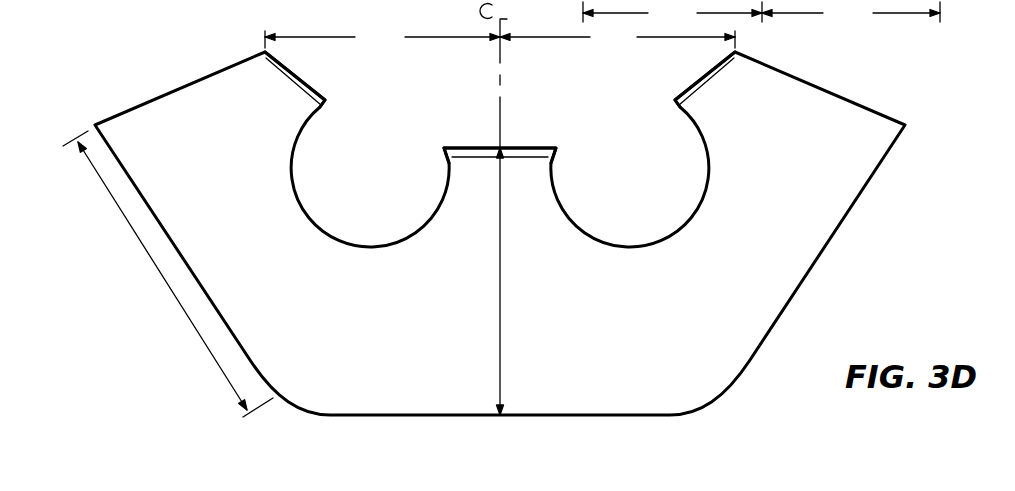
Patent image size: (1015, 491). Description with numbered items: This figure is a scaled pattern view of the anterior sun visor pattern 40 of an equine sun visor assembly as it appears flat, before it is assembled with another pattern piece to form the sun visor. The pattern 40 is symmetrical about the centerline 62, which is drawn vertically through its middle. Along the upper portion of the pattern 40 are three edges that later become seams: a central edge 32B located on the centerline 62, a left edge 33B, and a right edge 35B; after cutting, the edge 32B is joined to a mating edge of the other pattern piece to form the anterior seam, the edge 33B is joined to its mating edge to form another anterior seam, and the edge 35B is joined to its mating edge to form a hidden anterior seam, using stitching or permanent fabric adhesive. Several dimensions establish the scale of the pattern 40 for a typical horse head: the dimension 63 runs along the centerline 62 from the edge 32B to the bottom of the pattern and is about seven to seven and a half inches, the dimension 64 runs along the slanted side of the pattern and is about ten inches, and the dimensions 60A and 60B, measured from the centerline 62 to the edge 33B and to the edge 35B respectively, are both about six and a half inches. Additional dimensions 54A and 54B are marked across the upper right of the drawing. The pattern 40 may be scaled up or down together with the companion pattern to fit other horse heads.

The anterior sun visor pattern 40 is at (912, 172).
The edge 33B is at (313, 79).
The edge 35B is at (688, 80).
The edge 32B is at (527, 148).
The centerline 62 is at (500, 97).
The dimension 63 is at (503, 352).
The dimension 64 is at (167, 283).
The dimension 60A is at (382, 37).
The dimension 60B is at (617, 37).
The first width dimension 54A is at (672, 13).
The second width dimension 54B is at (851, 13).